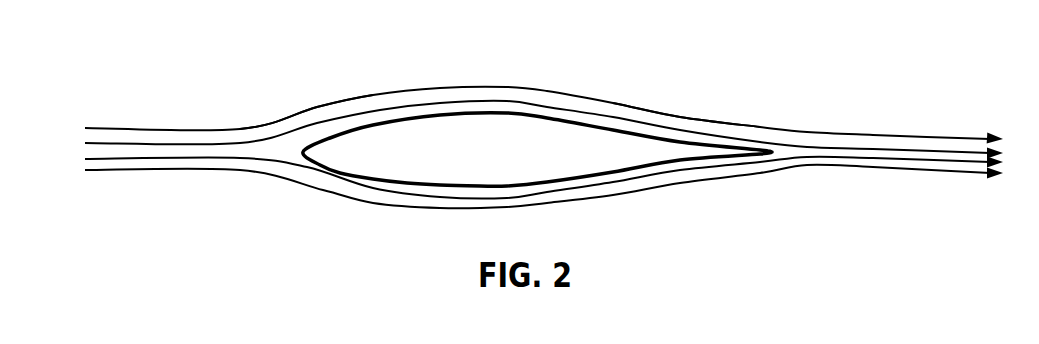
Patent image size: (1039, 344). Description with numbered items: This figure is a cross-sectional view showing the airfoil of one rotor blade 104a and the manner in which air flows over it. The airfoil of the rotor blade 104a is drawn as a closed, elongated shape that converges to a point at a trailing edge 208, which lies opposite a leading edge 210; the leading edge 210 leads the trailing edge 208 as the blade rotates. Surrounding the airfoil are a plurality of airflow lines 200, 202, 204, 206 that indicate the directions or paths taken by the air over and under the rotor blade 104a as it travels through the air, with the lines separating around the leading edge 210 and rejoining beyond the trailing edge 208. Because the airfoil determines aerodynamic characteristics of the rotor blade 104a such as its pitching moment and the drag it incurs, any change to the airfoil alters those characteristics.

The airflow line 200 is at (198, 129).
The airflow line 202 is at (87, 143).
The airflow line 204 is at (86, 159).
The airflow line 206 is at (168, 170).
The trailing edge 208 is at (704, 96).
The leading edge 210 is at (306, 90).
The rotor blade 104a is at (473, 112).